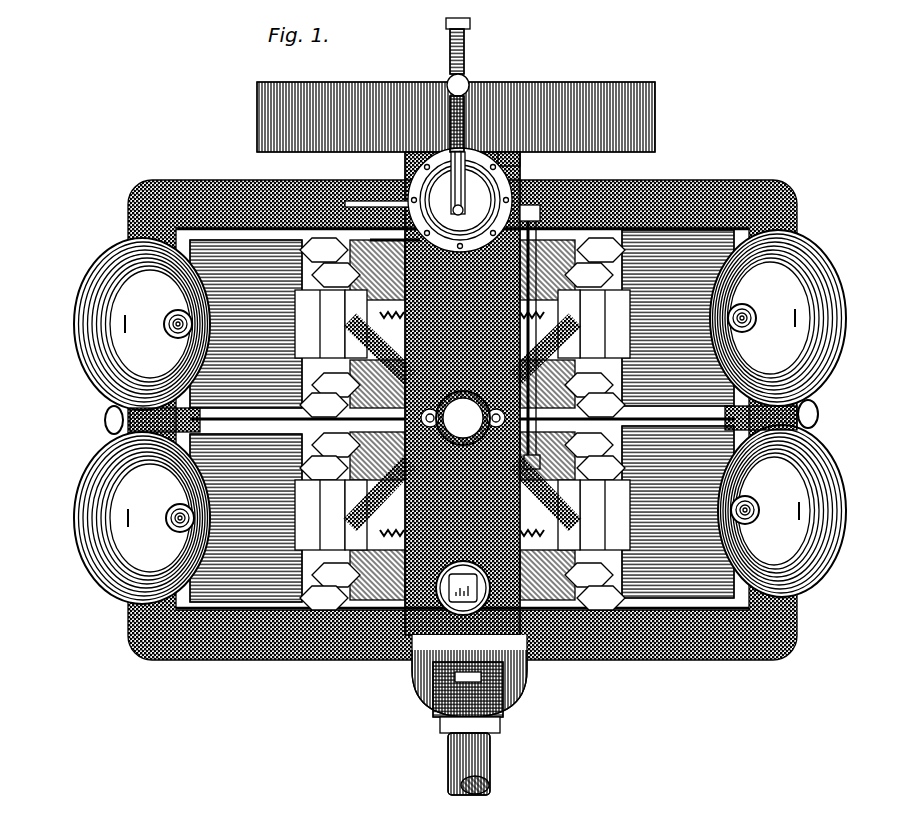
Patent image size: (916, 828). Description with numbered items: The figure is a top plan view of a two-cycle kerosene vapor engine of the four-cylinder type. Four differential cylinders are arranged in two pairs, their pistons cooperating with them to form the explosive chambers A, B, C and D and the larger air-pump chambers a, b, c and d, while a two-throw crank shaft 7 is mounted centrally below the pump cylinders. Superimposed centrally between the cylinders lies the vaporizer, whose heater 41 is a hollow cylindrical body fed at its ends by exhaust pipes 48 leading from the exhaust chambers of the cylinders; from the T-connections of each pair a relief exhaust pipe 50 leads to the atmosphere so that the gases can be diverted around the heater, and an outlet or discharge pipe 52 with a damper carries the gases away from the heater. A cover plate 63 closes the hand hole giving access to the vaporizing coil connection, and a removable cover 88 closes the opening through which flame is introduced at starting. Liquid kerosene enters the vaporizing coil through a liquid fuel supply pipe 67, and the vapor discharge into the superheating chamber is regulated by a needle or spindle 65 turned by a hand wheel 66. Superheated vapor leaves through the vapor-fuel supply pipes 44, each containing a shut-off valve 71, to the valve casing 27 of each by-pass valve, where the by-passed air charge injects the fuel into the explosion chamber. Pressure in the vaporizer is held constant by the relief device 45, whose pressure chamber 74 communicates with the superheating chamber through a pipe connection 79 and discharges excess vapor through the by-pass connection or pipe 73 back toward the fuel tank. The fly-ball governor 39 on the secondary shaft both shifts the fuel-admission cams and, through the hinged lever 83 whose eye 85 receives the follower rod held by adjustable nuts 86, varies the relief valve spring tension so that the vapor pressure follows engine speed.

The two-throw crank shaft 7 is at (447, 762).
The valve casing 27 is at (367, 325).
The fly-ball governor 39 is at (466, 78).
The heater 41 is at (462, 420).
The vapor-fuel supply pipes 44 is at (360, 344).
The relief device 45 is at (420, 178).
The exhaust pipes 48 is at (690, 192).
The relief exhaust pipe 50 is at (104, 421).
The outlet or discharge pipe 52 is at (452, 394).
The cover plate 63 is at (460, 574).
The needle or spindle 65 is at (527, 677).
The hand wheel 66 is at (428, 702).
The liquid fuel supply pipe 67 is at (436, 248).
The shut-off valve 71 is at (336, 330).
The by-pass connection or pipe 73 is at (382, 203).
The pressure chamber 74 is at (458, 252).
The pipe connection 79 is at (500, 326).
The hinged lever 83 is at (437, 186).
The eye 85 is at (440, 211).
The adjustable nuts 86 is at (480, 188).
The removable cover 88 is at (522, 172).
The explosive chamber A is at (843, 318).
The explosive chamber B is at (76, 325).
The explosive chamber C is at (835, 514).
The explosive chamber D is at (78, 517).
The air chamber a is at (630, 248).
The air chamber b is at (300, 248).
The air chamber c is at (643, 612).
The air chamber d is at (300, 606).